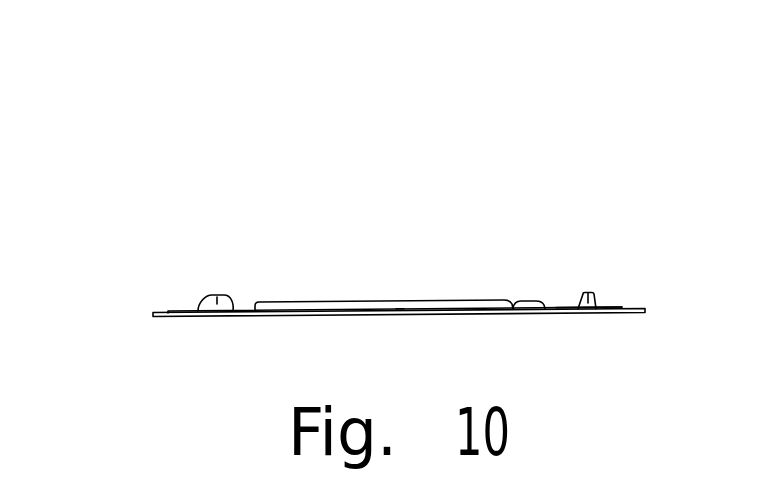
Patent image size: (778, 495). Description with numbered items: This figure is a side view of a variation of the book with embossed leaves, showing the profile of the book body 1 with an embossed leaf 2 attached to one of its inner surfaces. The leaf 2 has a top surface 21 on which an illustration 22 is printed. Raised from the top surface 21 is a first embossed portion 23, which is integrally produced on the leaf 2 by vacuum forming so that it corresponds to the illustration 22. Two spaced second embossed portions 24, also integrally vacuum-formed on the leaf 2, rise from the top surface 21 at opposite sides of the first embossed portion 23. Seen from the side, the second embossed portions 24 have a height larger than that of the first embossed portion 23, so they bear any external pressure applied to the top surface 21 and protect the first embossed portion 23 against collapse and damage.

The book body 1 is at (168, 311).
The leaf 2 is at (190, 311).
The top surface 21 is at (602, 308).
The illustration 22 is at (353, 290).
The first embossed portion 23 is at (521, 304).
The second embossed portions 24 is at (217, 297).